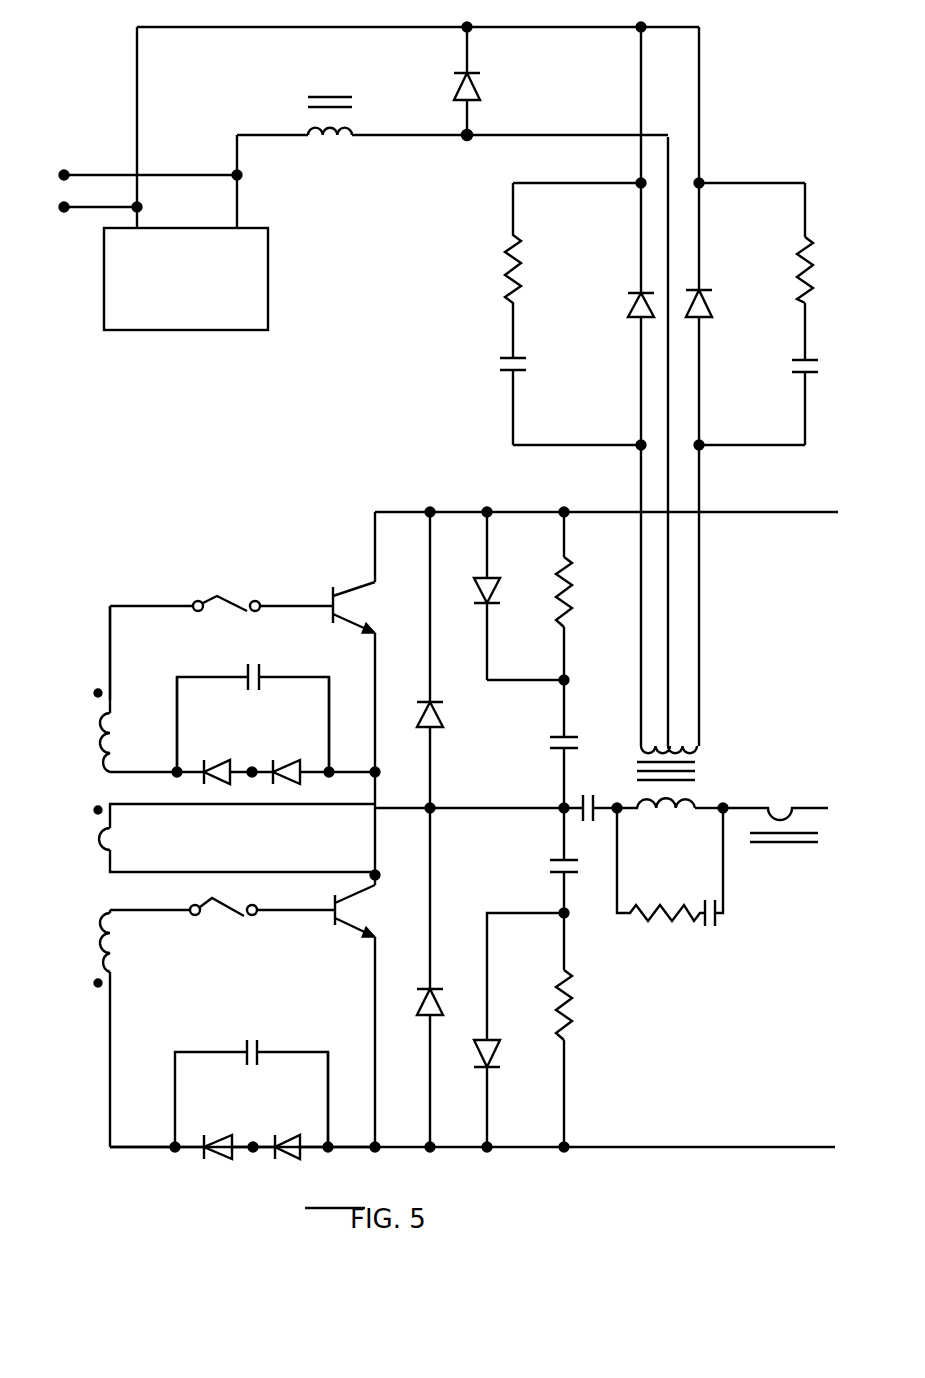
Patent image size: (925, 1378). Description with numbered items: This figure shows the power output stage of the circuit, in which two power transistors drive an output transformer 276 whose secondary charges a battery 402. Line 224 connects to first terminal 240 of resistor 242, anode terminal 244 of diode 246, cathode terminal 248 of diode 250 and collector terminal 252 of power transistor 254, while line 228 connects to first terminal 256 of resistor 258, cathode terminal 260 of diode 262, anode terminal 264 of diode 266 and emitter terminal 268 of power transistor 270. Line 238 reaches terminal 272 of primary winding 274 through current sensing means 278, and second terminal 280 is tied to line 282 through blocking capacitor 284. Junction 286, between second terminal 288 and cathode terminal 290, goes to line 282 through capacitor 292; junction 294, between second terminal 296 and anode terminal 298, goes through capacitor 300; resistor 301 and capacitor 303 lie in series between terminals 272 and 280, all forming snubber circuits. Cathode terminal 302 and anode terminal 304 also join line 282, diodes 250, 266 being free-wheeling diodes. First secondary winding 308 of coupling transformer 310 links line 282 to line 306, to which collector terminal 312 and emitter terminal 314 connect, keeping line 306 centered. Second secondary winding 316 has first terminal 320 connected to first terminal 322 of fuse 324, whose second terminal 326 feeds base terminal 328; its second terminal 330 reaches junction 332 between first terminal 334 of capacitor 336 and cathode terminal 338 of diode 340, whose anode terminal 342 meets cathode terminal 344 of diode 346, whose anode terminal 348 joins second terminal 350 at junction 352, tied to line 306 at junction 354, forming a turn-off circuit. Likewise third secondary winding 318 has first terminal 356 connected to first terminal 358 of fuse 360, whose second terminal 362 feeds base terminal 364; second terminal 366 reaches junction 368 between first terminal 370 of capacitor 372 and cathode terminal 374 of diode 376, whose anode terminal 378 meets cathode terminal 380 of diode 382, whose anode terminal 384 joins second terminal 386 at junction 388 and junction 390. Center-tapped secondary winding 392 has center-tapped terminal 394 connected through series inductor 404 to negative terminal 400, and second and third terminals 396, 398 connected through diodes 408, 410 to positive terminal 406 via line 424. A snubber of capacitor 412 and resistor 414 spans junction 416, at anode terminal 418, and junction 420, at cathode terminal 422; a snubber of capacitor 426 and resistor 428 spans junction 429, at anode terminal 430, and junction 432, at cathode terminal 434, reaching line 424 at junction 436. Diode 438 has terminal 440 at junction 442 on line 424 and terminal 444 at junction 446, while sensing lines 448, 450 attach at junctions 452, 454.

The line 224 is at (512, 507).
The line 228 is at (770, 1150).
The line 238 is at (816, 806).
The first terminal of resistor 240 is at (566, 545).
The resistor 242 is at (567, 600).
The anode terminal of diode 244 is at (486, 565).
The diode 246 is at (491, 585).
The cathode terminal of diode 248 is at (432, 663).
The diode 250 is at (446, 708).
The collector terminal of power transistor 252 is at (378, 510).
The power transistor 254 is at (337, 580).
The first terminal of resistor 256 is at (567, 1078).
The resistor 258 is at (567, 1018).
The cathode terminal of diode 260 is at (488, 1095).
The diode 262 is at (494, 1045).
The anode terminal of diode 264 is at (432, 1070).
The diode 266 is at (433, 985).
The emitter terminal of power transistor 268 is at (360, 935).
The power transistor 270 is at (358, 940).
The terminal of primary winding 272 is at (724, 806).
The primary winding 274 is at (700, 800).
The output transformer 276 is at (705, 735).
The current sensing means 278 is at (773, 852).
The second terminal of primary winding 280 is at (567, 765).
The line 282 is at (468, 806).
The blocking capacitor 284 is at (594, 812).
The junction 286 is at (566, 681).
The second terminal of resistor 288 is at (567, 660).
The cathode terminal of diode 290 is at (490, 650).
The capacitor 292 is at (567, 735).
The junction 294 is at (567, 915).
The second terminal of resistor 296 is at (567, 975).
The anode terminal of diode 298 is at (490, 952).
The capacitor 300 is at (562, 855).
The resistor 301 is at (665, 920).
The cathode terminal of diode 302 is at (432, 898).
The capacitor 303 is at (720, 925).
The anode terminal of diode 304 is at (434, 750).
The line 306 is at (374, 833).
The first secondary winding 308 is at (125, 836).
The coupling transformer 310 is at (86, 676).
The collector terminal of transistor 312 is at (377, 868).
The emitter terminal of transistor 314 is at (376, 650).
The second secondary winding 316 is at (112, 730).
The third secondary winding 318 is at (118, 965).
The first terminal of winding 320 is at (112, 688).
The first terminal of fuse 322 is at (197, 600).
The fuse 324 is at (226, 592).
The second terminal of fuse 326 is at (258, 600).
The base terminal of transistor 328 is at (333, 610).
The second terminal of winding 330 is at (175, 772).
The junction 332 is at (178, 745).
The first terminal of capacitor 334 is at (205, 676).
The capacitor 336 is at (256, 670).
The cathode terminal of diode 338 is at (177, 775).
The diode 340 is at (212, 768).
The anode terminal of diode 342 is at (262, 745).
The cathode terminal of diode 344 is at (268, 785).
The diode 346 is at (282, 768).
The anode terminal of diode 348 is at (332, 765).
The second terminal of capacitor 350 is at (320, 676).
The junction 352 is at (377, 755).
The junction 354 is at (377, 768).
The first terminal of third secondary winding 356 is at (112, 910).
The first terminal of fuse 358 is at (190, 918).
The fuse 360 is at (232, 920).
The second terminal of fuse 362 is at (258, 915).
The base terminal of transistor 364 is at (330, 900).
The second terminal of winding 366 is at (112, 1040).
The junction 368 is at (172, 1145).
The first terminal of capacitor 370 is at (200, 1055).
The capacitor 372 is at (255, 1042).
The cathode terminal of diode 374 is at (178, 1150).
The diode 376 is at (205, 1160).
The anode terminal of diode 378 is at (240, 1160).
The cathode terminal of diode 380 is at (256, 1138).
The diode 382 is at (285, 1130).
The anode terminal of diode 384 is at (300, 1156).
The second terminal of capacitor 386 is at (290, 1052).
The junction 388 is at (332, 1150).
The junction 390 is at (376, 1140).
The center-tapped secondary winding 392 is at (710, 687).
The center-tapped terminal 394 is at (670, 628).
The second terminal of secondary winding 396 is at (643, 588).
The third terminal of secondary winding 398 is at (702, 545).
The negative terminal of battery 400 is at (238, 226).
The battery 402 is at (270, 298).
The series inductor 404 is at (316, 90).
The positive terminal of battery 406 is at (137, 225).
The diode 408 is at (629, 306).
The diode 410 is at (705, 292).
The capacitor 412 is at (800, 372).
The resistor 414 is at (803, 272).
The junction 416 is at (702, 448).
The anode terminal of diode 418 is at (703, 325).
The junction 420 is at (703, 180).
The cathode terminal of diode 422 is at (703, 232).
The line 424 is at (540, 27).
The capacitor 426 is at (510, 372).
The resistor 428 is at (511, 255).
The junction 429 is at (640, 443).
The anode terminal of diode 430 is at (640, 358).
The junction 432 is at (640, 188).
The cathode terminal of diode 434 is at (640, 255).
The junction 436 is at (640, 30).
The diode 438 is at (481, 85).
The cathode terminal of diode 440 is at (470, 70).
The junction 442 is at (464, 30).
The cathode terminal of diode 444 is at (470, 125).
The junction 446 is at (465, 140).
The battery condition sensing line 448 is at (85, 174).
The battery condition sensing line 450 is at (90, 210).
The junction 452 is at (240, 176).
The junction 454 is at (139, 204).